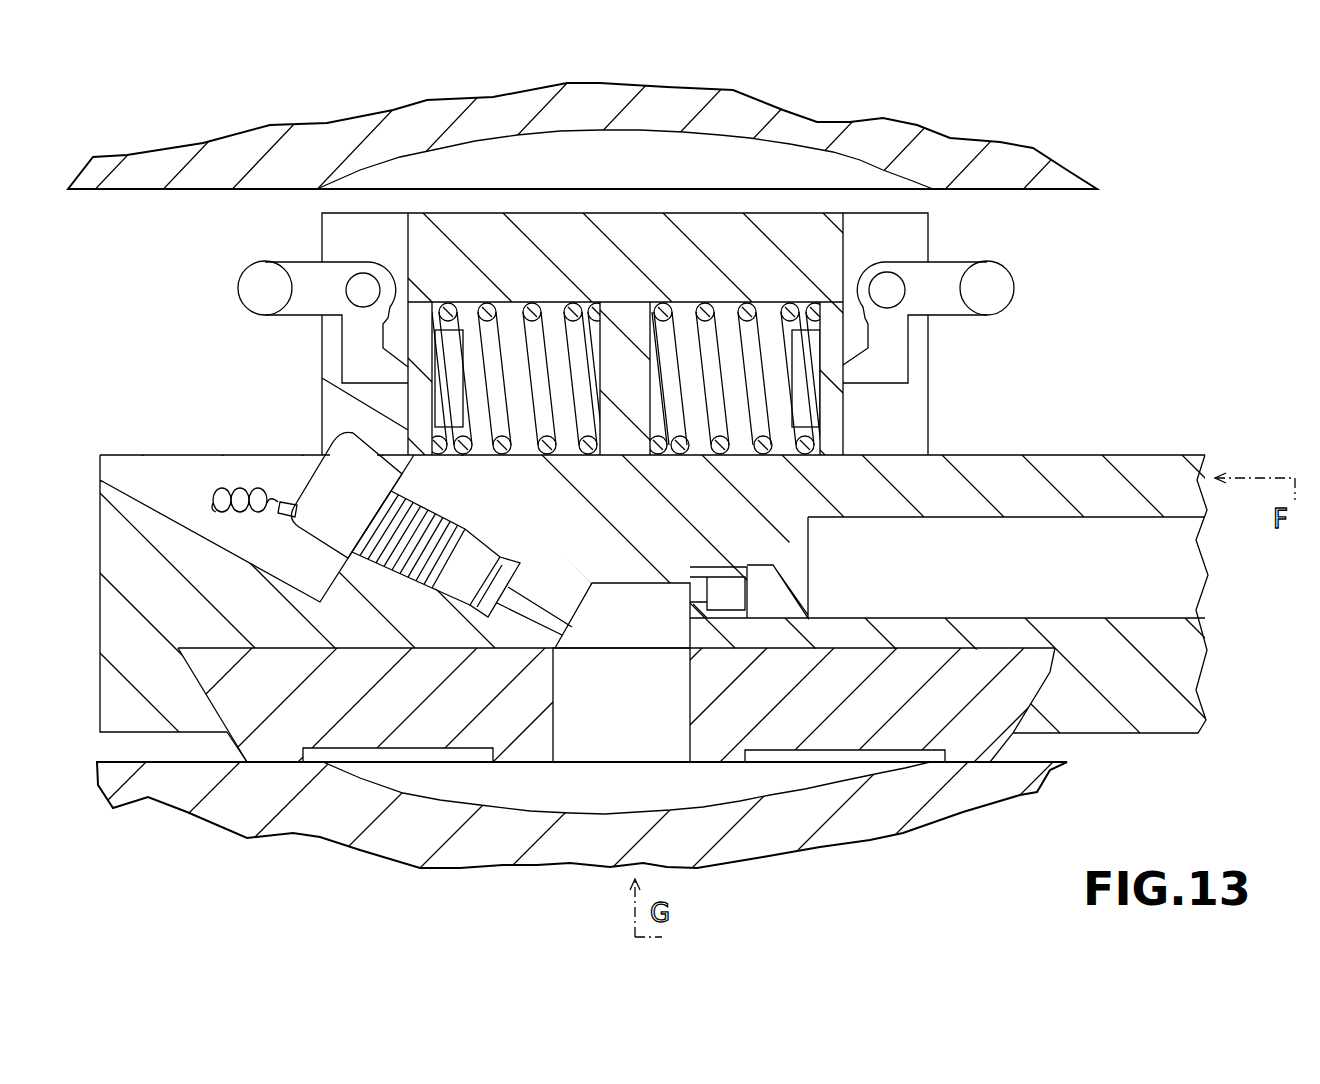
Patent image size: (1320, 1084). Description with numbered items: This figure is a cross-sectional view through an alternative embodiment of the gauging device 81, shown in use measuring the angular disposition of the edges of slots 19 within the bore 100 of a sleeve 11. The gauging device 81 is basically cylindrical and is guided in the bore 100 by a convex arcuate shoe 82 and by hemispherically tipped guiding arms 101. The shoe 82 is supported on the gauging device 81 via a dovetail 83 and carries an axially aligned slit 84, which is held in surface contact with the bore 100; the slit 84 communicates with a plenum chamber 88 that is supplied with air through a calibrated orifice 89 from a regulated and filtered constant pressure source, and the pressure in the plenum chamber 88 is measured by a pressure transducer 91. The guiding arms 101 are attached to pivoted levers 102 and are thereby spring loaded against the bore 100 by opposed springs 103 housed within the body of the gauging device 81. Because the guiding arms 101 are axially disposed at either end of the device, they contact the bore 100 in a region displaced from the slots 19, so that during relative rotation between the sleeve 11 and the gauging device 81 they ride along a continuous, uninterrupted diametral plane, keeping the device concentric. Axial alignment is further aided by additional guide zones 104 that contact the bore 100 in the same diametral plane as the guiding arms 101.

The sleeve 11 is at (195, 178).
The slots 19 is at (632, 172).
The gauging device 81 is at (1023, 457).
The arcuate shoe 82 is at (245, 735).
The dovetail 83 is at (210, 708).
The slit 84 is at (640, 713).
The plenum chamber 88 is at (640, 632).
The calibrated orifice 89 is at (705, 590).
The pressure transducer 91 is at (320, 490).
The bore 100 is at (152, 763).
The guiding arms 101 is at (250, 290).
The pivoted levers 102 is at (298, 310).
The opposed springs 103 is at (700, 300).
The additional guide zones 104 is at (275, 763).